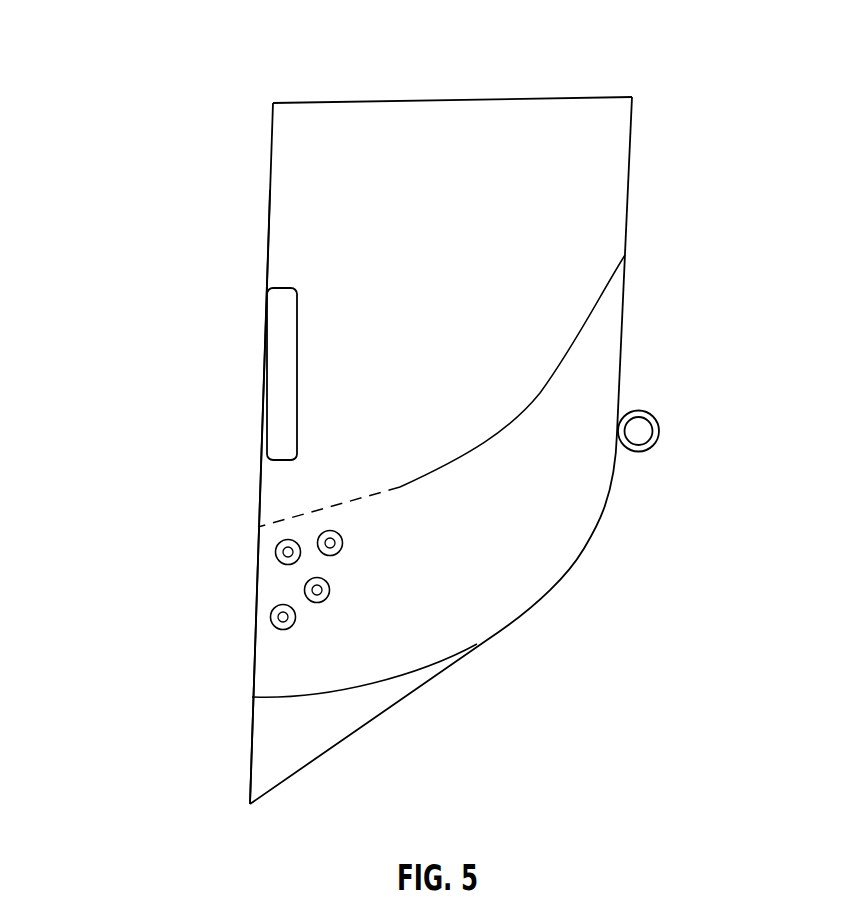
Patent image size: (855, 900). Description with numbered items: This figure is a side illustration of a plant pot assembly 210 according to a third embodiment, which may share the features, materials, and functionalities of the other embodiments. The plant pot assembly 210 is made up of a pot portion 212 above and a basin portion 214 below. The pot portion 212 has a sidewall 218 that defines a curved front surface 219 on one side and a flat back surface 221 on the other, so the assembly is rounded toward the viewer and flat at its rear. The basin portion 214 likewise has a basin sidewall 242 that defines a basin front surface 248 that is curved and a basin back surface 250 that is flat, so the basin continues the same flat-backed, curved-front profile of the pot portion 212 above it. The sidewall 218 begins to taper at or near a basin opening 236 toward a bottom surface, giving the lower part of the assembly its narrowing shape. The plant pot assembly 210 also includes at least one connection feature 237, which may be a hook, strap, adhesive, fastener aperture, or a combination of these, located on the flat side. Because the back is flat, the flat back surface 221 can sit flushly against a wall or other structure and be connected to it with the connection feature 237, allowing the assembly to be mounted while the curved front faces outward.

The plant pot assembly 210 is at (155, 41).
The pot portion 212 is at (664, 106).
The basin portion 214 is at (629, 332).
The sidewall 218 is at (312, 250).
The curved front surface 219 is at (628, 195).
The flat back surface 221 is at (272, 137).
The basin opening 236 is at (385, 682).
The connection feature 237 is at (280, 387).
The basin sidewall 242 is at (348, 617).
The basin front surface 248 is at (602, 512).
The basin back surface 250 is at (253, 658).